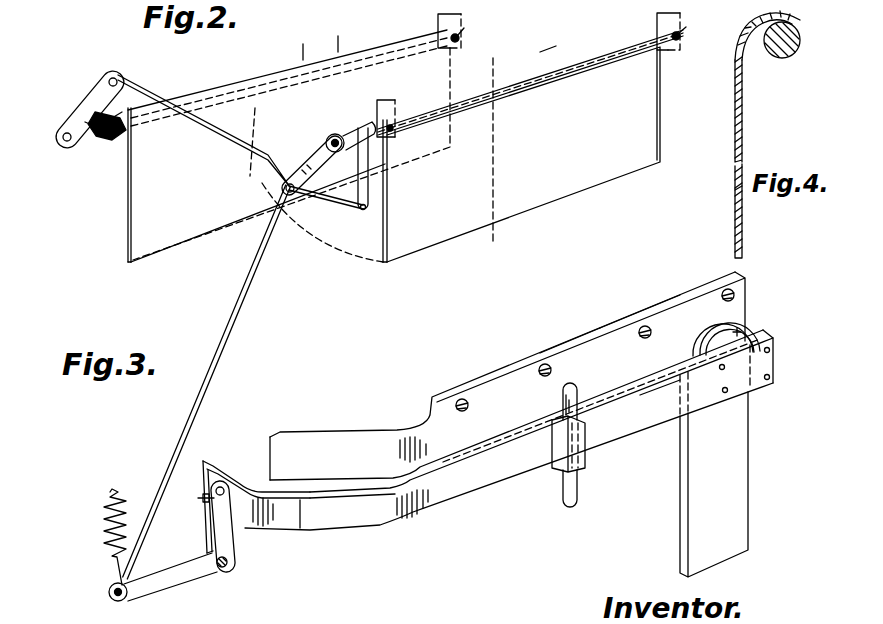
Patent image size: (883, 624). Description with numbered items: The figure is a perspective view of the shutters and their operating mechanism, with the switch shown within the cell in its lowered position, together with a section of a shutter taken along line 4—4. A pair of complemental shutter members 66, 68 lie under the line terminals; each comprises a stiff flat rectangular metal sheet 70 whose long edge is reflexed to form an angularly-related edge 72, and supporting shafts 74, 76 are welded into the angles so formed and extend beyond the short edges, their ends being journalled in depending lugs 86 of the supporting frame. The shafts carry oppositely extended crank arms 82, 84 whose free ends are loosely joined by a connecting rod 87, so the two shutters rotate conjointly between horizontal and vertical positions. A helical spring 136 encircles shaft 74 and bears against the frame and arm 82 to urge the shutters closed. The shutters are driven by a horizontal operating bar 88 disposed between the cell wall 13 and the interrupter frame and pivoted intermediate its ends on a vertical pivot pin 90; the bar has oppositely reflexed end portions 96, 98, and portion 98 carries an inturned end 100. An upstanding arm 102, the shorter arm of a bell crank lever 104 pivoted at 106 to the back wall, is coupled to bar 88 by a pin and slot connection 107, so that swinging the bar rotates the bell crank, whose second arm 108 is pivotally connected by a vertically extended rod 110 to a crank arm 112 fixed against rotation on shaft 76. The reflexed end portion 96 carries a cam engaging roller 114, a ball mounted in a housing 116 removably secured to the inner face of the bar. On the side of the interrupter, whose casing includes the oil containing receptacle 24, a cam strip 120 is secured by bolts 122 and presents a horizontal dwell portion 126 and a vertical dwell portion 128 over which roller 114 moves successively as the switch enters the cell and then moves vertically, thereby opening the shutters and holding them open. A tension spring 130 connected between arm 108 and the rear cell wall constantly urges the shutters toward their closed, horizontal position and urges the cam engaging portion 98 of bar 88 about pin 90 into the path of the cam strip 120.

In FIG. 2, the cell wall 13 is at (303, 44).
In FIG. 2, the horizontal dwell portion 126 is at (338, 36).
In FIG. 3, the horizontal dwell portion 126 is at (605, 362).
In FIG. 2, the depending lugs 86 is at (115, 143).
In FIG. 2, the supporting shaft 74 is at (460, 36).
In FIG. 2, the vertical dwell portion 128 is at (540, 52).
In FIG. 3, the vertical dwell portion 128 is at (723, 447).
In FIG. 2, the angularly-related edge 72 is at (180, 94).
In FIG. 4, the angularly-related edge 72 is at (788, 14).
In FIG. 2, the supporting shaft 76 is at (681, 34).
In FIG. 4, the supporting shaft 76 is at (782, 58).
In FIG. 2, the metal sheet 70 is at (153, 202).
In FIG. 4, the metal sheet 70 is at (734, 121).
In FIG. 2, the shutter member 66 is at (300, 66).
In FIG. 2, the crank arm 82 is at (103, 97).
In FIG. 2, the helical spring 136 is at (88, 147).
In FIG. 2, the connecting rod 87 is at (270, 148).
In FIG. 2, the crank arm 112 is at (313, 162).
In FIG. 2, the crank arm 84 is at (365, 167).
In FIG. 2, the shutter member 68 is at (390, 262).
In FIG. 4, the shutter member 68 is at (732, 143).
In FIG. 2, the section line 4— 4 is at (495, 154).
In FIG. 3, the vertically extended rod 110 is at (246, 298).
In FIG. 3, the inturned end 100 is at (220, 468).
In FIG. 3, the tension spring 130 is at (115, 507).
In FIG. 3, the pin and slot connection 107 is at (203, 500).
In FIG. 3, the upstanding arm 102 is at (212, 530).
In FIG. 3, the bell crank lever 104 is at (243, 548).
In FIG. 3, the pivot pin 106 is at (238, 568).
In FIG. 3, the second arm 108 is at (185, 575).
In FIG. 3, the oil containing receptacle 24 is at (317, 447).
In FIG. 3, the reflexed end portion 98 is at (328, 513).
In FIG. 3, the horizontal operating bar 88 is at (452, 498).
In FIG. 3, the bolts 122 is at (466, 399).
In FIG. 3, the cam strip 120 is at (570, 339).
In FIG. 3, the cam engaging roller 114 is at (700, 333).
In FIG. 3, the housing 116 is at (747, 322).
In FIG. 3, the vertical pivot pin 90 is at (580, 481).
In FIG. 3, the reflexed end portion 96 is at (656, 413).